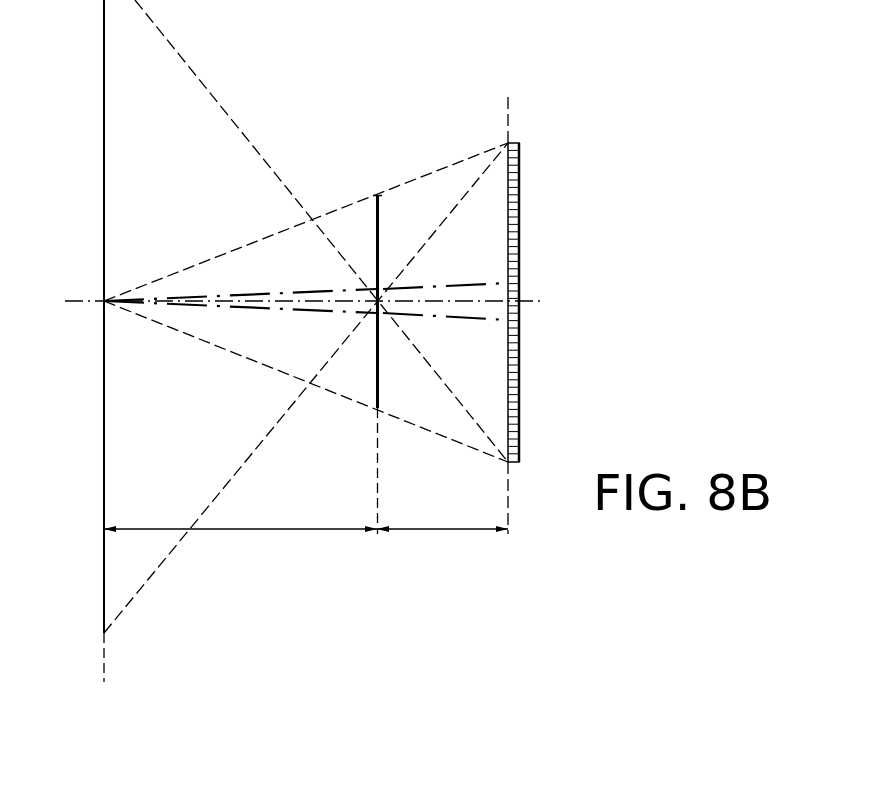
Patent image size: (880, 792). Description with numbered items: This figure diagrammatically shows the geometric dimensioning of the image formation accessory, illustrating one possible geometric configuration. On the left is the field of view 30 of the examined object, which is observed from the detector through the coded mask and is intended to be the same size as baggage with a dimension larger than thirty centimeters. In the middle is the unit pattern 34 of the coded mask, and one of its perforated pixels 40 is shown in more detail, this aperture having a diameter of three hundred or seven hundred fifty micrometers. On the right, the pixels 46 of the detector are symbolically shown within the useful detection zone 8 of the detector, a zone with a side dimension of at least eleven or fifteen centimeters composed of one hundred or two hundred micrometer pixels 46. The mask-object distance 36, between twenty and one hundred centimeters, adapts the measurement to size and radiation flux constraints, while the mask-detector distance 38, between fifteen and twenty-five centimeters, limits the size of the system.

The useful detection zone 8 is at (505, 176).
The field of view 30 is at (104, 178).
The unit pattern 34 is at (377, 226).
The mask-object distance 36 is at (240, 514).
The mask-detector distance 38 is at (442, 514).
The perforated pixel 40 is at (383, 303).
The pixels 46 is at (513, 250).